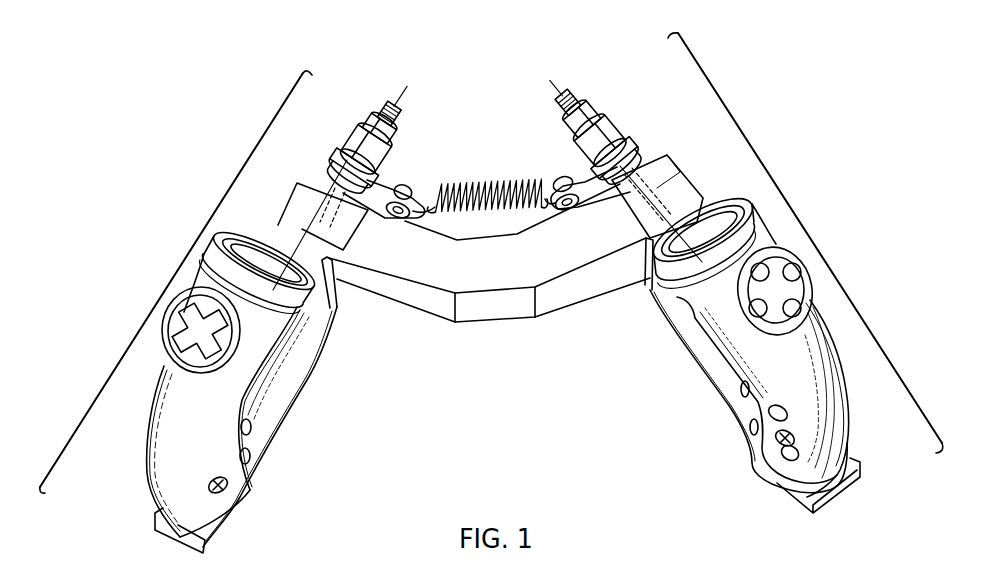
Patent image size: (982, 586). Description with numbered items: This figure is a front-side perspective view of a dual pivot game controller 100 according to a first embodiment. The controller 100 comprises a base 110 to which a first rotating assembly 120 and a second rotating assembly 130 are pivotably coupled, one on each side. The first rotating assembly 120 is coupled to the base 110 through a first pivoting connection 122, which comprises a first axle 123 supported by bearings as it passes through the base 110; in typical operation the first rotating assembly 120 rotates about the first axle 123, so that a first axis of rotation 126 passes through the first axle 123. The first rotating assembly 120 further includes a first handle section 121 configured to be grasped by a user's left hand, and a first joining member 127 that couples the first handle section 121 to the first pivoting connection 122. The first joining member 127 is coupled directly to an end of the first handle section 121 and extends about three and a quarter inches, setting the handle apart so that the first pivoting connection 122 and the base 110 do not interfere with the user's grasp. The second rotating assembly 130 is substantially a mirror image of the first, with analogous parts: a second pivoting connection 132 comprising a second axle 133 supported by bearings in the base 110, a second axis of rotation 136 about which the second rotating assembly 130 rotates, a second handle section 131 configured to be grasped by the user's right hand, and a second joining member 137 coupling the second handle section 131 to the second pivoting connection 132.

The dual pivot game controller 100 is at (540, 70).
The base 110 is at (504, 323).
The first rotating assembly 120 is at (172, 272).
The first handle section 121 is at (251, 410).
The first pivoting connection 122 is at (357, 221).
The first axle 123 is at (312, 213).
The first axis of rotation 126 is at (352, 139).
The first joining member 127 is at (312, 373).
The second rotating assembly 130 is at (813, 244).
The second handle section 131 is at (760, 428).
The second pivoting connection 132 is at (632, 203).
The second axle 133 is at (686, 172).
The second axis of rotation 136 is at (614, 127).
The second joining member 137 is at (690, 353).